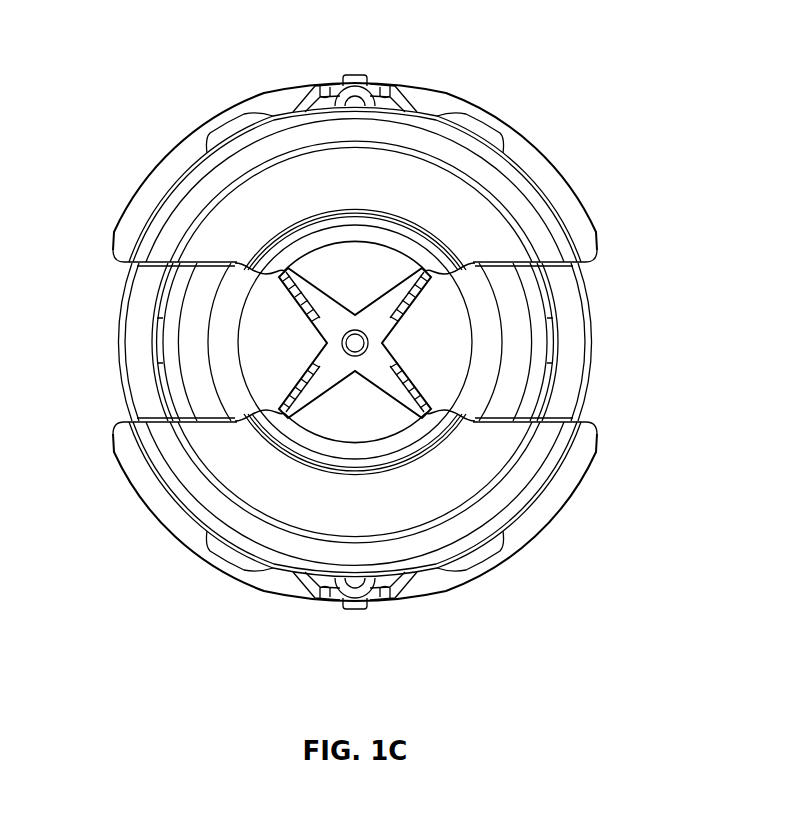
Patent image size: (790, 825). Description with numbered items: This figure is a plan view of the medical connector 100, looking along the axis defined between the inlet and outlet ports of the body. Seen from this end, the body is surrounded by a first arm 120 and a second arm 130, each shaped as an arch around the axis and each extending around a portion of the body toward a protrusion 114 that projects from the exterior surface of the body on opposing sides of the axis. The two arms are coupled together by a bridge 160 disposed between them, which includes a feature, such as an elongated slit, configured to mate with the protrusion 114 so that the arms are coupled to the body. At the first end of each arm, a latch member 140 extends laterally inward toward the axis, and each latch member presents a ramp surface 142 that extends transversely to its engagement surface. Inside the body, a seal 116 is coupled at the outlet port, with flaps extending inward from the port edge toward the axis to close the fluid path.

The medical connector 100 is at (130, 102).
The protrusion 114 is at (160, 350).
The seal 116 is at (190, 403).
The first arm 120 is at (357, 73).
The second arm 130 is at (355, 611).
The latch member 140 is at (530, 215).
The ramp surface 142 is at (445, 185).
The bridge 160 is at (135, 292).